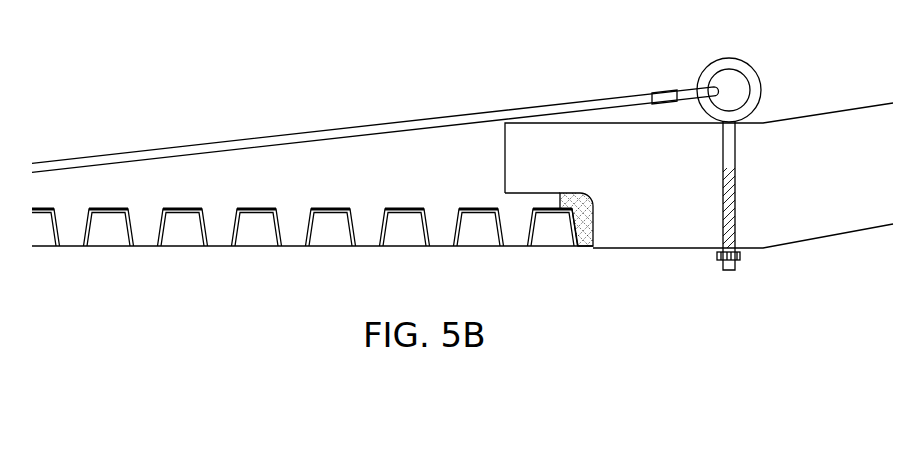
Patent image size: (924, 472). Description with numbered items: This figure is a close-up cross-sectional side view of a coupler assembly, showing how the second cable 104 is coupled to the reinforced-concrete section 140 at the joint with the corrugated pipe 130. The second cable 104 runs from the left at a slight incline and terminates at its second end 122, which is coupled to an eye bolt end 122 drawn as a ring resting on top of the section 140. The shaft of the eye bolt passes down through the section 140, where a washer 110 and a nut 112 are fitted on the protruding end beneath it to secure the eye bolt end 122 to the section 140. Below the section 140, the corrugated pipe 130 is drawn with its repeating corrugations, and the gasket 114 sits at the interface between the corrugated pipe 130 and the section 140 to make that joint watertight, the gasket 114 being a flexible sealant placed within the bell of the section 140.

The second cable 104 is at (217, 143).
The washer 110 is at (740, 252).
The nut 112 is at (717, 252).
The gasket 114 is at (587, 247).
The second end 122 is at (761, 84).
The corrugated pipe 130 is at (118, 249).
The reinforced-concrete section 140 is at (668, 187).